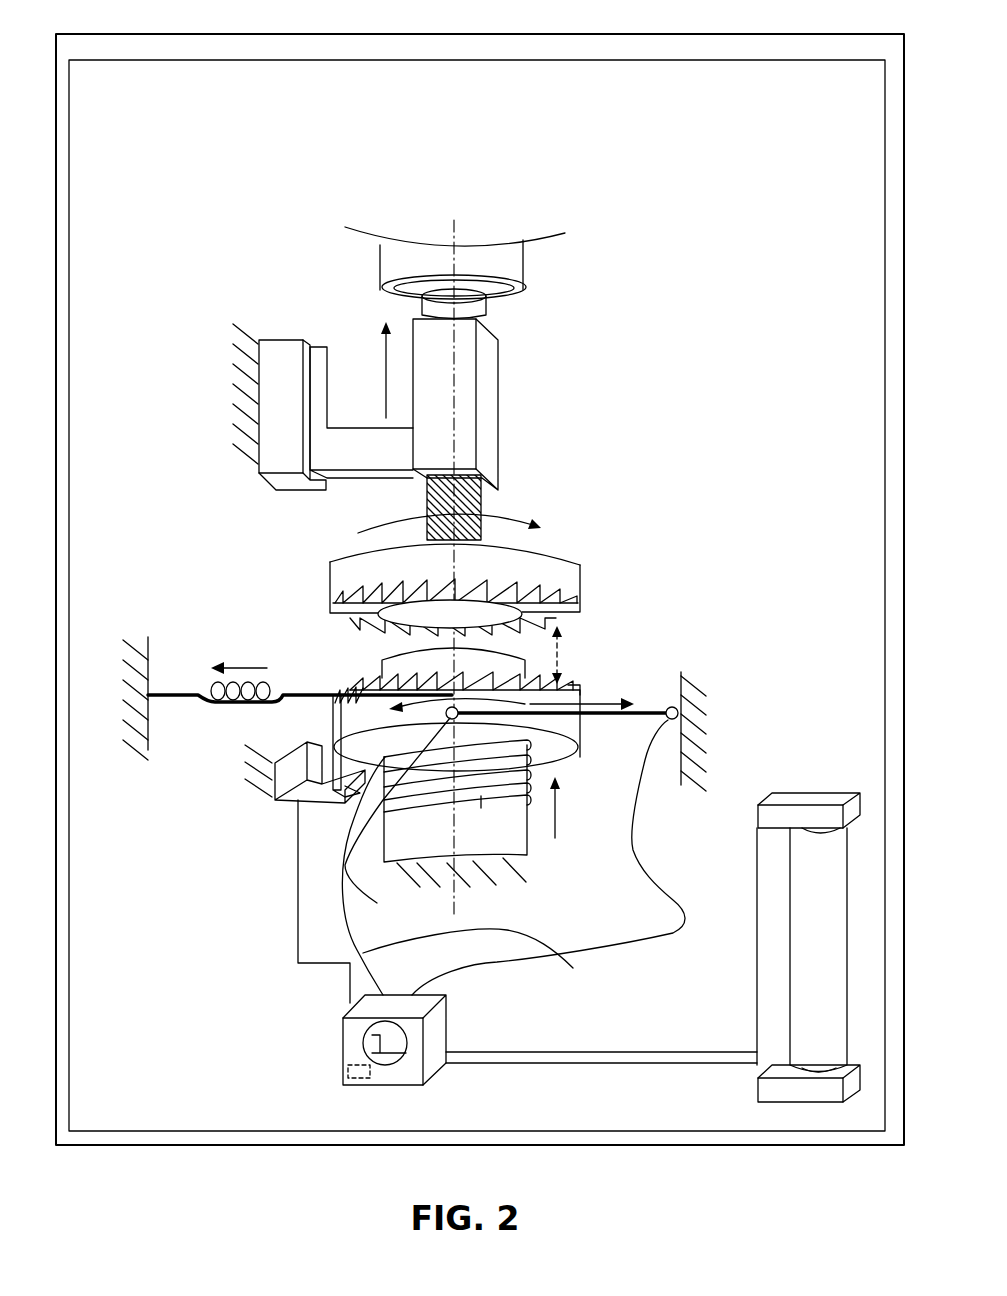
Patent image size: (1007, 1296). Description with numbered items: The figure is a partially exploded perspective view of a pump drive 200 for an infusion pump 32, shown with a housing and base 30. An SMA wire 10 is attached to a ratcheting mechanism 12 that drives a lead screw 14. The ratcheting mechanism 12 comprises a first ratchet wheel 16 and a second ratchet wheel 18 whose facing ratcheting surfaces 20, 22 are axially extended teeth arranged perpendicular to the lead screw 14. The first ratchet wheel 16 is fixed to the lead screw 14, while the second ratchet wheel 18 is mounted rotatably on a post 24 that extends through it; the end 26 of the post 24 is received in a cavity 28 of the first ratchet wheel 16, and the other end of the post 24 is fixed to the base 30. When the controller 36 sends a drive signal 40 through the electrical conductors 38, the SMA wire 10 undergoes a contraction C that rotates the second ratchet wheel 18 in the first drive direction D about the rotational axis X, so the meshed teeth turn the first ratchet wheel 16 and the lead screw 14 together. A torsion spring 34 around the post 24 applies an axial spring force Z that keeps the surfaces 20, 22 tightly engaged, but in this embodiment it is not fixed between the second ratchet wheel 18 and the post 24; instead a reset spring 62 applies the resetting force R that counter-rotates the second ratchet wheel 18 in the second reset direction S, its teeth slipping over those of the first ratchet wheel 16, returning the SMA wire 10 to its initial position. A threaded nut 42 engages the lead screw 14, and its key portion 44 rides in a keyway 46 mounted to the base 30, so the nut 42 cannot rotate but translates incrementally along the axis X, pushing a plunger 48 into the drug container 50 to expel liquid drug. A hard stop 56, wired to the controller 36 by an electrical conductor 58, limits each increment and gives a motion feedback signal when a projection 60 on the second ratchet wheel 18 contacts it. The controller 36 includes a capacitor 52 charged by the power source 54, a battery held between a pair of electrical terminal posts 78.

The SMA wire 10 is at (650, 708).
The ratcheting mechanism 12 is at (318, 575).
The lead screw 14 is at (488, 503).
The first ratchet wheel 16 is at (335, 595).
The second ratchet wheel 18 is at (583, 742).
The ratcheting surface 20 is at (582, 612).
The ratcheting surface 22 is at (570, 690).
The post 24 is at (528, 845).
The end 26 is at (382, 660).
The cavity 28 is at (395, 622).
The base 30 is at (82, 1118).
The infusion pump 32 is at (232, 33).
The torsion spring 34 is at (397, 825).
The controller 36 is at (445, 1043).
The electrical conductors 38 is at (497, 962).
The drive signal 40 is at (363, 1043).
The threaded nut 42 is at (498, 447).
The key portion 44 is at (352, 437).
The keyway 46 is at (277, 353).
The plunger 48 is at (487, 313).
The drug container 50 is at (515, 265).
The capacitor 52 is at (346, 1073).
The power source 54 is at (800, 963).
The hard stop 56 is at (270, 760).
The electrical conductor 58 is at (298, 885).
The projection 60 is at (350, 808).
The reset spring 62 is at (178, 690).
The electrical terminal posts 78 is at (828, 797).
The pump drive 200 is at (200, 215).
The rotational axis X is at (455, 232).
The first (drive) direction D is at (520, 515).
The resetting force R is at (242, 667).
The contraction C is at (590, 700).
The second (reset) direction S is at (415, 707).
The axial spring force Z is at (560, 806).